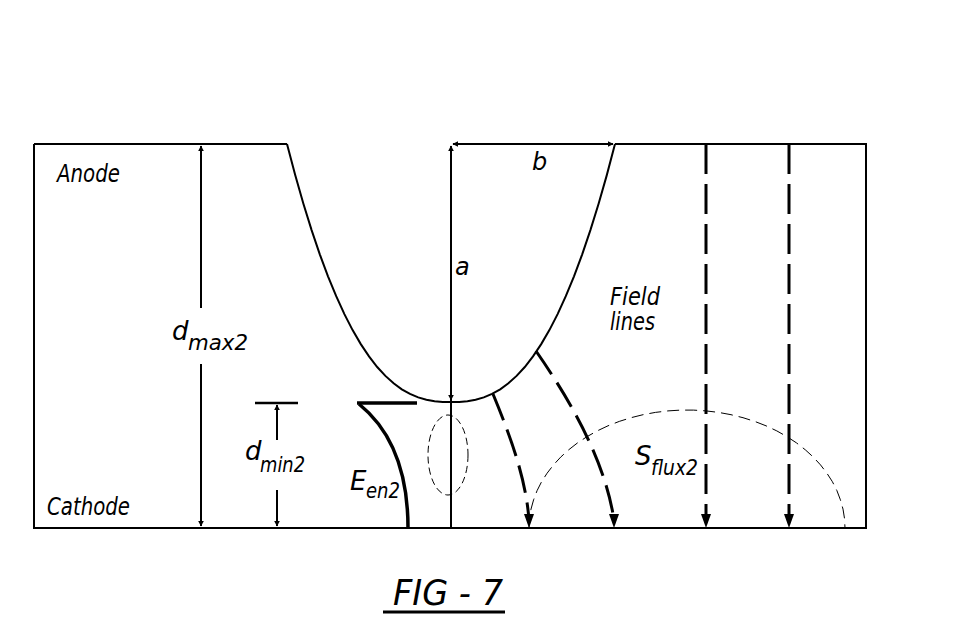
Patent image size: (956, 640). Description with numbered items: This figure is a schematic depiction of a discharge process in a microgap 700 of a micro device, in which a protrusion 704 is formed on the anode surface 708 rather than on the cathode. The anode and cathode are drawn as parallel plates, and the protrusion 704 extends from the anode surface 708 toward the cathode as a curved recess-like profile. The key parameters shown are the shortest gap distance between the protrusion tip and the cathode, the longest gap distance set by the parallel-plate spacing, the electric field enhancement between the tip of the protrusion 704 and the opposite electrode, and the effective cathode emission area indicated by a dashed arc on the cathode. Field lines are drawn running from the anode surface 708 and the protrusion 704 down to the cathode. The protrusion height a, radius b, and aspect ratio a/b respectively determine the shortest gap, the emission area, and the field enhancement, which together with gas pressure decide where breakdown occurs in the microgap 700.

The microgap 700 is at (196, 70).
The protrusion 704 is at (335, 298).
The anode surface 708 is at (239, 144).